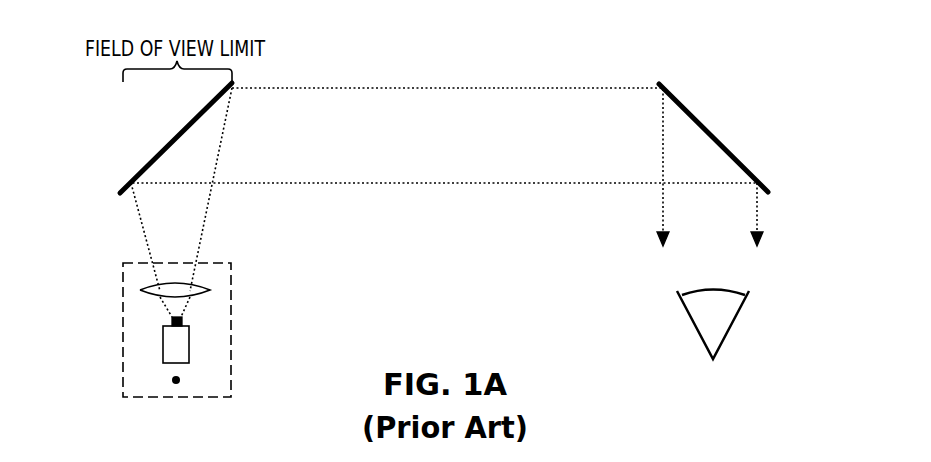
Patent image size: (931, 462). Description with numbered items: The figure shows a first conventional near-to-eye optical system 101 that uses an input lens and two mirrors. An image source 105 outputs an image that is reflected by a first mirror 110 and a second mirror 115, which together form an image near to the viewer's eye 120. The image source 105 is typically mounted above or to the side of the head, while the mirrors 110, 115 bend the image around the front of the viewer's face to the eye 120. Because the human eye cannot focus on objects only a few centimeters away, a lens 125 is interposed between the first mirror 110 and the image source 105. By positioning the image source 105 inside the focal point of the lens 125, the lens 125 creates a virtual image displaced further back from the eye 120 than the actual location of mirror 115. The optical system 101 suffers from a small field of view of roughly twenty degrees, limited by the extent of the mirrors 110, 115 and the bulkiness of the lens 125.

The conventional near-to-eye optical system 101 is at (423, 242).
The image source 105 is at (163, 340).
The first mirror 110 is at (140, 168).
The second mirror 115 is at (725, 143).
The eye 120 is at (730, 330).
The lens 125 is at (142, 288).